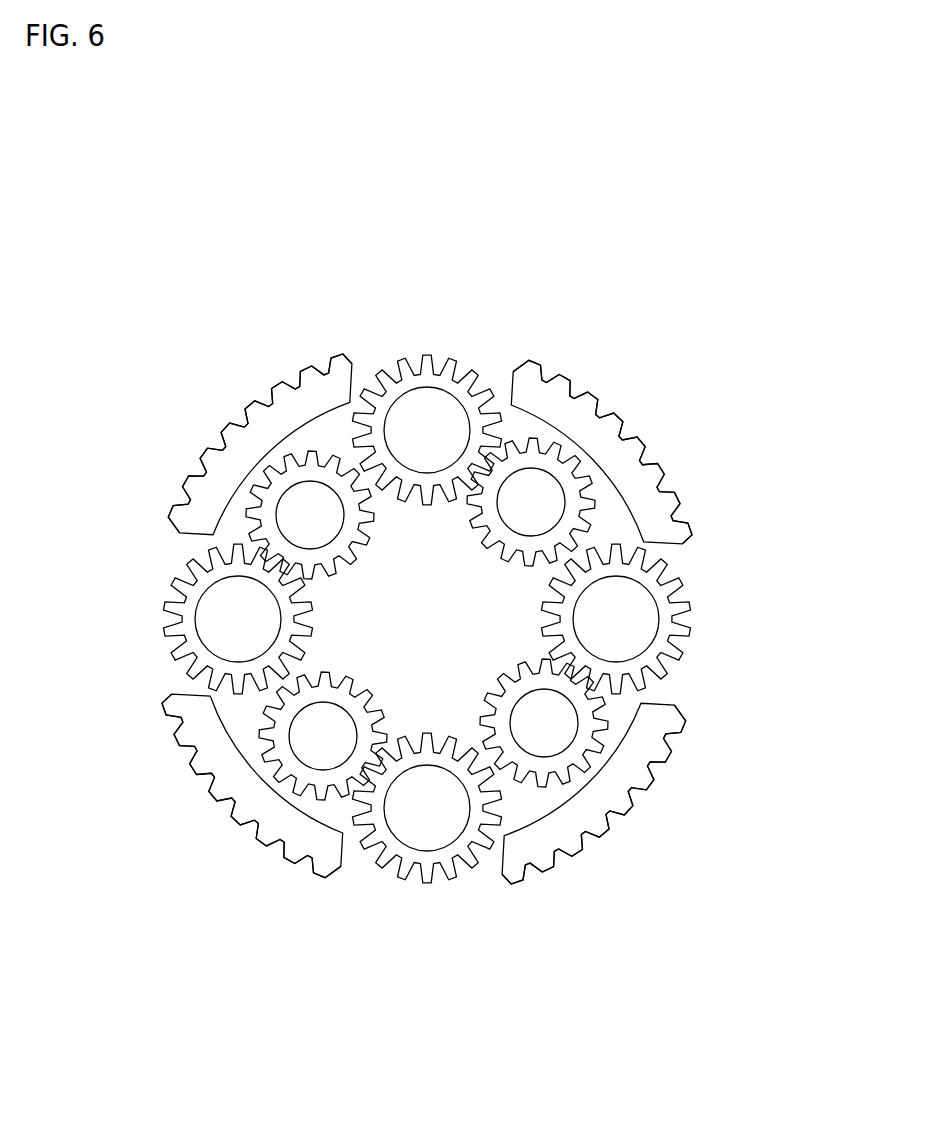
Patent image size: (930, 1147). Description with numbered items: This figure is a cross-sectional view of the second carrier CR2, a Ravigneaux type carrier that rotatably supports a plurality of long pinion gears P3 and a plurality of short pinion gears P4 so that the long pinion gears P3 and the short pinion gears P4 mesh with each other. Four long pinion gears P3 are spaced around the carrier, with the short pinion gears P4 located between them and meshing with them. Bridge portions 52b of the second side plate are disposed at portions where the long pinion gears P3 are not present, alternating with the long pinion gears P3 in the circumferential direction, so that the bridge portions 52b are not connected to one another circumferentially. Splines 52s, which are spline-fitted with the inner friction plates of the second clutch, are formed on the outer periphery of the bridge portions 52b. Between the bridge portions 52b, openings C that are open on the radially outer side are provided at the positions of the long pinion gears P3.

The second carrier CR2 is at (425, 265).
The bridge portion 52b is at (258, 425).
The spline 52s is at (320, 373).
The long pinion gear P3 is at (407, 387).
The short pinion gear P4 is at (510, 542).
The opening C is at (487, 347).